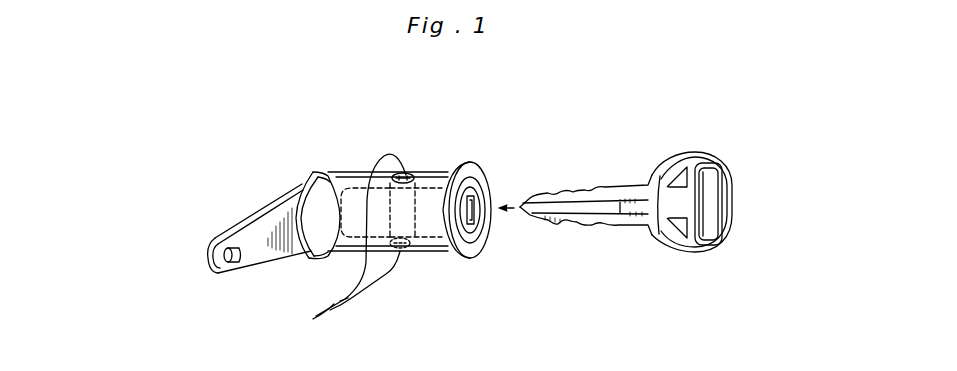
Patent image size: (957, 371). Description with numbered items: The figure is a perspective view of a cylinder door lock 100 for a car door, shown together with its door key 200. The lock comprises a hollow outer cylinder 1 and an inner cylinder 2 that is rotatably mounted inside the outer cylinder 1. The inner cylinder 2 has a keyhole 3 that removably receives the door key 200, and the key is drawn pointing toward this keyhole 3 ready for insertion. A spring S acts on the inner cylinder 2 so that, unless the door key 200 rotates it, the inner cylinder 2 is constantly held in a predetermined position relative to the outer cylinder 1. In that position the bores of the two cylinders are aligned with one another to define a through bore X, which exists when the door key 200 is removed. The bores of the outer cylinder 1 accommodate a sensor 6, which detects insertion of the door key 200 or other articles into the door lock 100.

The spring S is at (310, 171).
The cylinder door lock 100 is at (352, 162).
The outer cylinder 1 is at (468, 167).
The inner cylinder 2 is at (474, 207).
The keyhole 3 is at (473, 220).
The sensor 6 is at (407, 172).
The through bore X is at (411, 222).
The door key 200 is at (657, 168).